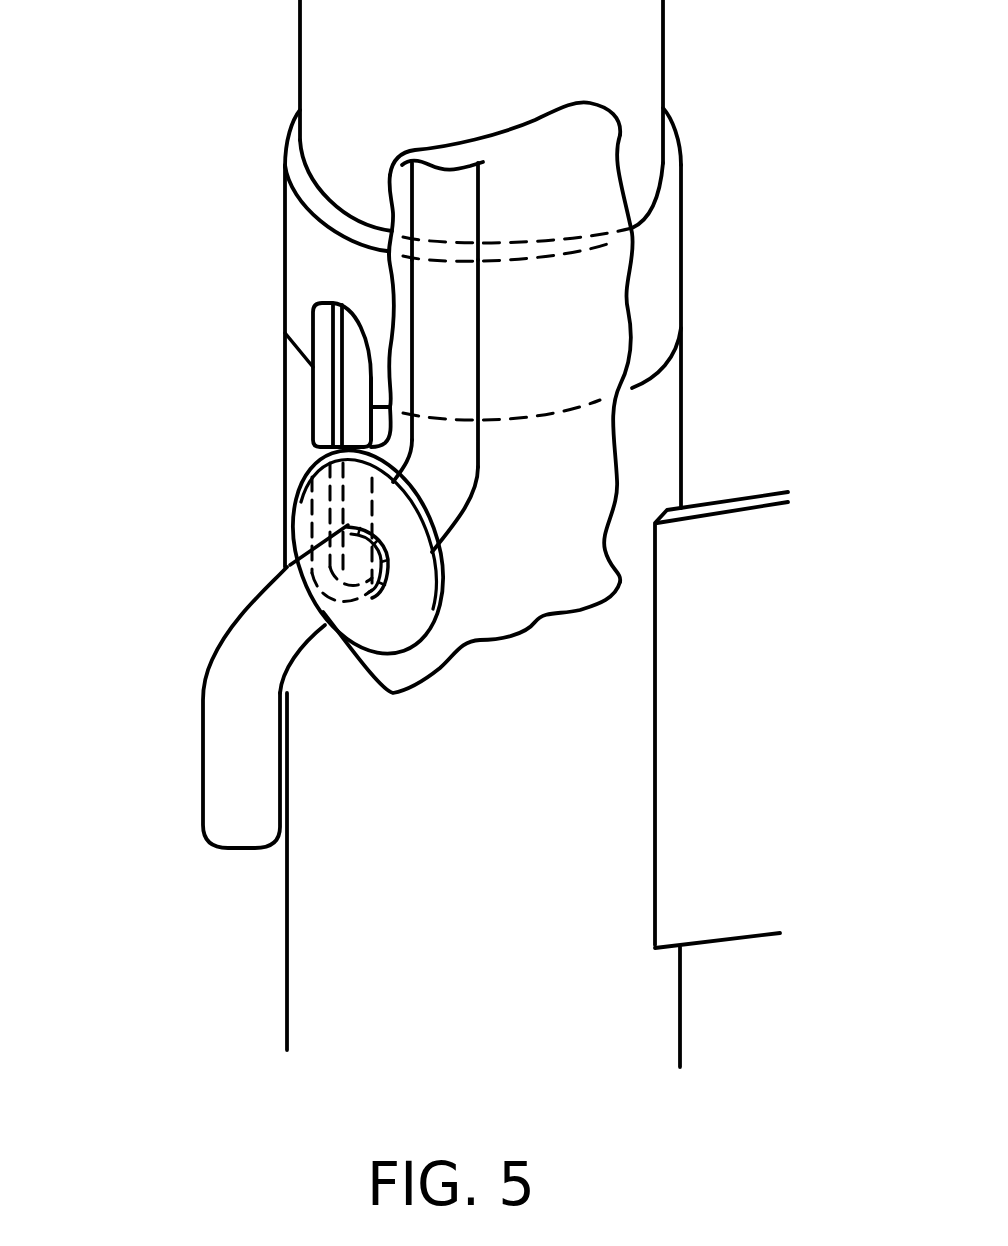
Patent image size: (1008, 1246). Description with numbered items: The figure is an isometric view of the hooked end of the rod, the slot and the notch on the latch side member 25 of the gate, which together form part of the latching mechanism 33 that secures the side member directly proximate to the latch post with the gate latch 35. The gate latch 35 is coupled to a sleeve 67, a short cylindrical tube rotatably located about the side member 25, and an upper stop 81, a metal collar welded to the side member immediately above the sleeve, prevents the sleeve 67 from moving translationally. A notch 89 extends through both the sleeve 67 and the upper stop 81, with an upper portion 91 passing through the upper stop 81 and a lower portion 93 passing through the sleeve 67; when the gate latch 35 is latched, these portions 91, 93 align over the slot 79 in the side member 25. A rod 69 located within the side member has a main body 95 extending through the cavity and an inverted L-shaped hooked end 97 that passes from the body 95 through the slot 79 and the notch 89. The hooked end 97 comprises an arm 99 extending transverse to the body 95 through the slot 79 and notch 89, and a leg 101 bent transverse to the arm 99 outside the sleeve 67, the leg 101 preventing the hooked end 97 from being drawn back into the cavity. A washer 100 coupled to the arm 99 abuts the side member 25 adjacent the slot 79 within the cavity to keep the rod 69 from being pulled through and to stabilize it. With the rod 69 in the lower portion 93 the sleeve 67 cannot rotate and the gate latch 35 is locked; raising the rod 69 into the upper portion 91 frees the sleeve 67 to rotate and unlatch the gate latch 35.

The latch side member 25 is at (640, 63).
The latching mechanism 33 is at (215, 558).
The gate latch 35 is at (747, 915).
The sleeve 67 is at (655, 442).
The rod 69 is at (450, 210).
The slot 79 is at (317, 390).
The upper stop 81 is at (660, 257).
The notch 89 is at (317, 436).
The upper portion of the notch 91 is at (317, 344).
The lower portion of the notch 93 is at (317, 413).
The main body of the rod 95 is at (443, 342).
The hooked end 97 is at (462, 513).
The arm 99 is at (337, 613).
The washer 100 is at (410, 618).
The leg 101 is at (240, 773).